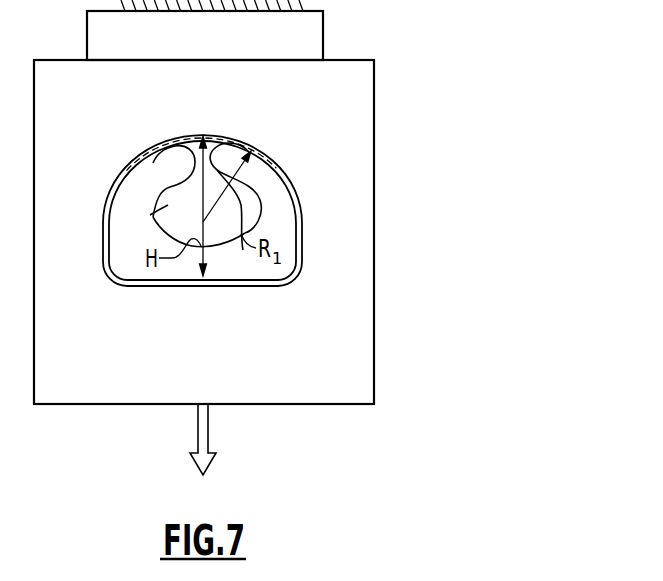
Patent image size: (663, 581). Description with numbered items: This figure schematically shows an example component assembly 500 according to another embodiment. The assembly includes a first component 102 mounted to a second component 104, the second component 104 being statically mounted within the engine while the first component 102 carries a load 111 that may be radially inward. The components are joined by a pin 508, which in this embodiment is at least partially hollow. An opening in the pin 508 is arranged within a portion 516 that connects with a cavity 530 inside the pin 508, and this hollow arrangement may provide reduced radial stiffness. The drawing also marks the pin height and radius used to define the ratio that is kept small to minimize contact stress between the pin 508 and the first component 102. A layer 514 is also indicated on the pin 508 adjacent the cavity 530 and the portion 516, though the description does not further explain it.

The component assembly 500 is at (297, 202).
The first component 102 is at (363, 112).
The second component 104 is at (307, 32).
The pin 508 is at (280, 229).
The portion 516 is at (140, 166).
The coating layer 514 is at (272, 158).
The cavity 530 is at (150, 215).
The load 111 is at (210, 465).